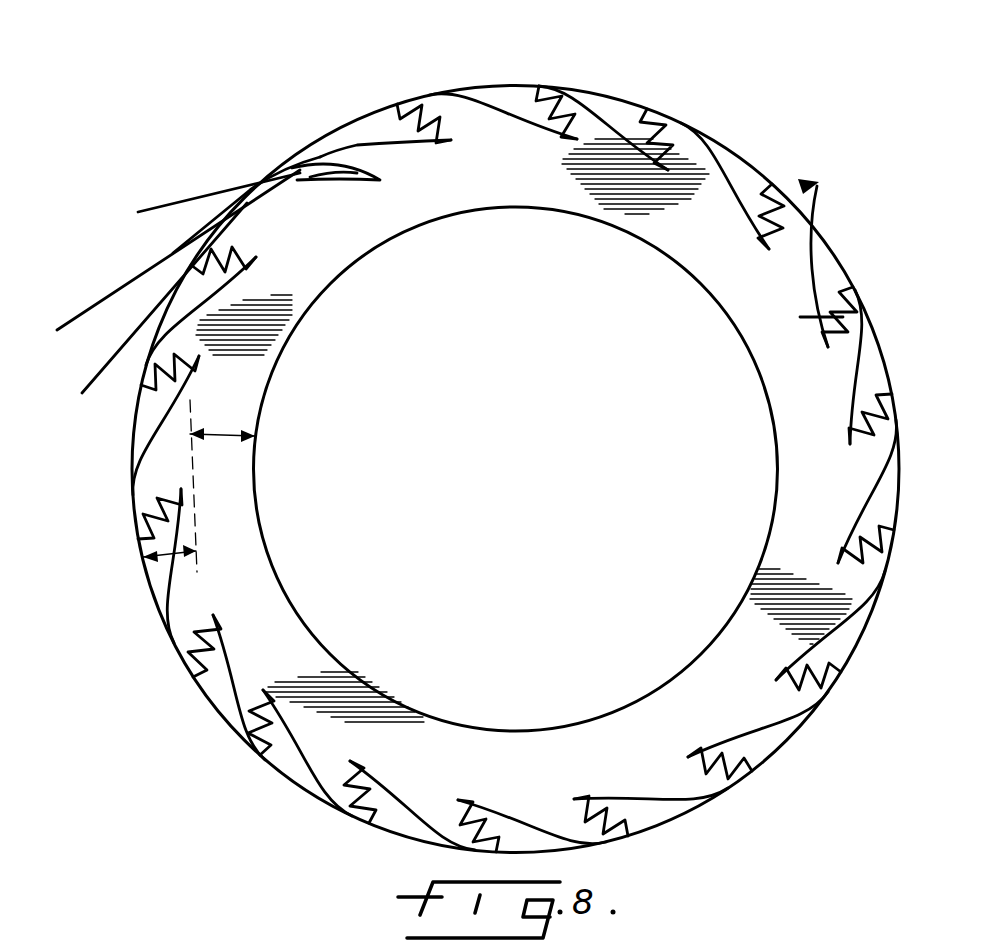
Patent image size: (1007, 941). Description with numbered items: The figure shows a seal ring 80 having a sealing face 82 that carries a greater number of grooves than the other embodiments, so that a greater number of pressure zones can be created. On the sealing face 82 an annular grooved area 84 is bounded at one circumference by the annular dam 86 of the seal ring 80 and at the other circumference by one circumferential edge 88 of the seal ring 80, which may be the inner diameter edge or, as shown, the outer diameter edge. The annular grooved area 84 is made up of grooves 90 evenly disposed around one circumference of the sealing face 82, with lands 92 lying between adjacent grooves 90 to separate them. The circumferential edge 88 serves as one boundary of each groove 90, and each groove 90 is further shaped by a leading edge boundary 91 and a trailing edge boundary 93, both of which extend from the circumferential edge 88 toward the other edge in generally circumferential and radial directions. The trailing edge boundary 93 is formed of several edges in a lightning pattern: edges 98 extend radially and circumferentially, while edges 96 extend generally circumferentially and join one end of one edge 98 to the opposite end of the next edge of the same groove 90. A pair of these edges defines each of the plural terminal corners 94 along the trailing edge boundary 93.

The seal ring 80 is at (273, 798).
The sealing face 82 is at (490, 167).
The annular grooved area 84 is at (170, 553).
The annular dam 86 is at (225, 442).
The circumferential edge 88 is at (250, 745).
The grooves 90 is at (263, 203).
The leading edge boundary 91 is at (457, 74).
The lands 92 is at (443, 112).
The trailing edge boundary 93 is at (445, 155).
The terminal corner 94 is at (354, 183).
The circumferentially extending edges 96 is at (313, 183).
The circumferentially and radially extending edges 98 is at (313, 190).